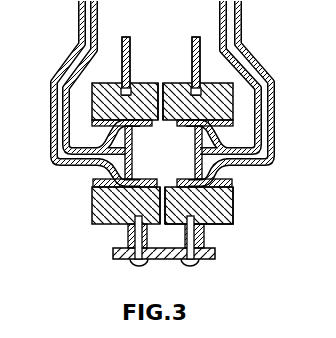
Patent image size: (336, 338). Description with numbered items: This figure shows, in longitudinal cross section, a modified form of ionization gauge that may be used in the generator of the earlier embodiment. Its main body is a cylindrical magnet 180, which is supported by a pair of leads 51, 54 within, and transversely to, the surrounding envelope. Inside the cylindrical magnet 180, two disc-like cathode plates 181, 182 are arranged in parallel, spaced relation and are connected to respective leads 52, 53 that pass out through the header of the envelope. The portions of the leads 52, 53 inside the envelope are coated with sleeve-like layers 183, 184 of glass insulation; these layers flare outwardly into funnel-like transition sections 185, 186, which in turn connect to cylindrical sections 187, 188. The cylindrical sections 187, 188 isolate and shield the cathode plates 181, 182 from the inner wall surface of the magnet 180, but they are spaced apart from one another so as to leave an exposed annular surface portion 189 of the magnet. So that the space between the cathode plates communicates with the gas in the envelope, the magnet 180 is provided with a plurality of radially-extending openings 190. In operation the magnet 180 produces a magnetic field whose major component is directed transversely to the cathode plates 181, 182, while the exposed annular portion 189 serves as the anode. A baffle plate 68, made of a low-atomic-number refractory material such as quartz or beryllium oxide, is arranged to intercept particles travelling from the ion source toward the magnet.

The lead 51 is at (128, 63).
The lead 52 is at (79, 17).
The lead 53 is at (243, 20).
The lead 54 is at (193, 42).
The baffle plate 68 is at (158, 260).
The cylindrical magnet 180 is at (270, 251).
The cathode plate 181 is at (133, 156).
The cathode plate 182 is at (195, 159).
The sleeve-like layer of glass insulation 183 is at (50, 97).
The sleeve-like layer of glass insulation 184 is at (276, 88).
The funnel-like transition section 185 is at (107, 174).
The funnel-like transition section 186 is at (232, 171).
The cylindrical section 187 is at (97, 208).
The cylindrical section 188 is at (233, 203).
The exposed annular surface portion 189 is at (172, 180).
The radially-extending openings 190 is at (168, 70).